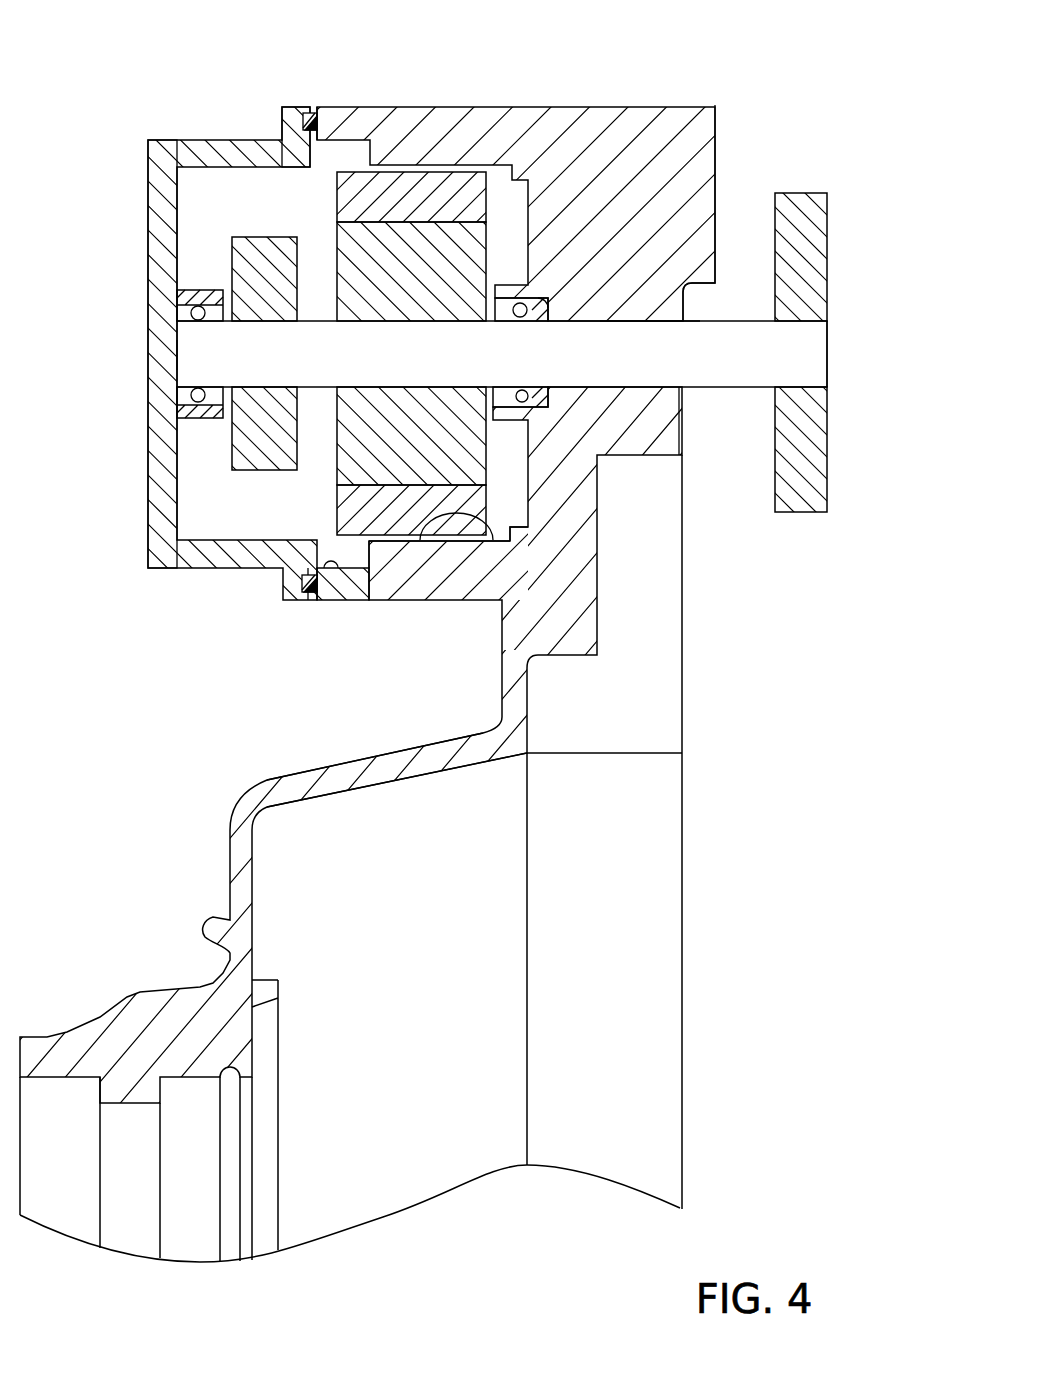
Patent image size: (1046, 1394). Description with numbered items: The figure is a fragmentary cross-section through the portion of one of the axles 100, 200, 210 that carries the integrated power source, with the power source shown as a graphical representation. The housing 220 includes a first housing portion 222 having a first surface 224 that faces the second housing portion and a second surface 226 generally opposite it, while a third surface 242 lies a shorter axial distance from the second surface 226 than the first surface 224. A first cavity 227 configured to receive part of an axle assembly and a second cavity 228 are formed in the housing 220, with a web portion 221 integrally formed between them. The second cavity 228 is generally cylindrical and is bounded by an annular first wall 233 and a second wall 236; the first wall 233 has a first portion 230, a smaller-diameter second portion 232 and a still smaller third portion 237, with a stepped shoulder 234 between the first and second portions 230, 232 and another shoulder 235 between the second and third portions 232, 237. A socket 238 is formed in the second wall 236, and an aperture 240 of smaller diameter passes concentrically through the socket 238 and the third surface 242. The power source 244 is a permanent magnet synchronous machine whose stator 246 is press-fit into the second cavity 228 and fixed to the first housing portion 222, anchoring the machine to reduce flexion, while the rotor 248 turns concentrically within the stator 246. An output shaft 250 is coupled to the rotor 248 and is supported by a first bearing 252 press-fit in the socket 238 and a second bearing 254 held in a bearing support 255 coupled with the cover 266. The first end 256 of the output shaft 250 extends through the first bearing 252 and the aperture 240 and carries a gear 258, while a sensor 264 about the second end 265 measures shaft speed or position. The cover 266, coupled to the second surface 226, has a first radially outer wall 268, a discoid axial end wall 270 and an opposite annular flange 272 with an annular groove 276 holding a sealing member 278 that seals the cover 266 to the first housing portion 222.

The axle 100 is at (523, 697).
The axle 200 is at (523, 697).
The axle 210 is at (253, 43).
The housing 220 is at (502, 697).
The web portion 221 is at (565, 608).
The first housing portion 222 is at (568, 105).
The first surface 224 is at (717, 137).
The second surface 226 is at (307, 112).
The first cavity 227 is at (347, 793).
The second cavity 228 is at (388, 542).
The first portion 230 is at (325, 568).
The second portion 232 is at (420, 540).
The first wall 233 is at (316, 141).
The shoulder 234 is at (368, 561).
The shoulder 235 is at (493, 540).
The second wall 236 is at (633, 321).
The third portion 237 is at (513, 525).
The socket 238 is at (557, 321).
The aperture 240 is at (620, 322).
The third surface 242 is at (680, 446).
The power source 244 is at (294, 506).
The stator 246 is at (352, 200).
The rotor 248 is at (405, 243).
The output shaft 250 is at (812, 364).
The first bearing 252 is at (550, 393).
The second bearing 254 is at (190, 397).
The bearing support 255 is at (193, 290).
The first end 256 is at (828, 335).
The gear 258 is at (828, 268).
The sensor 264 is at (250, 473).
The second end 265 is at (193, 370).
The cover 266 is at (160, 136).
The first radially outer wall 268 is at (242, 139).
The axial end wall 270 is at (150, 215).
The annular flange 272 is at (302, 590).
The annular groove 276 is at (308, 593).
The sealing member 278 is at (317, 593).